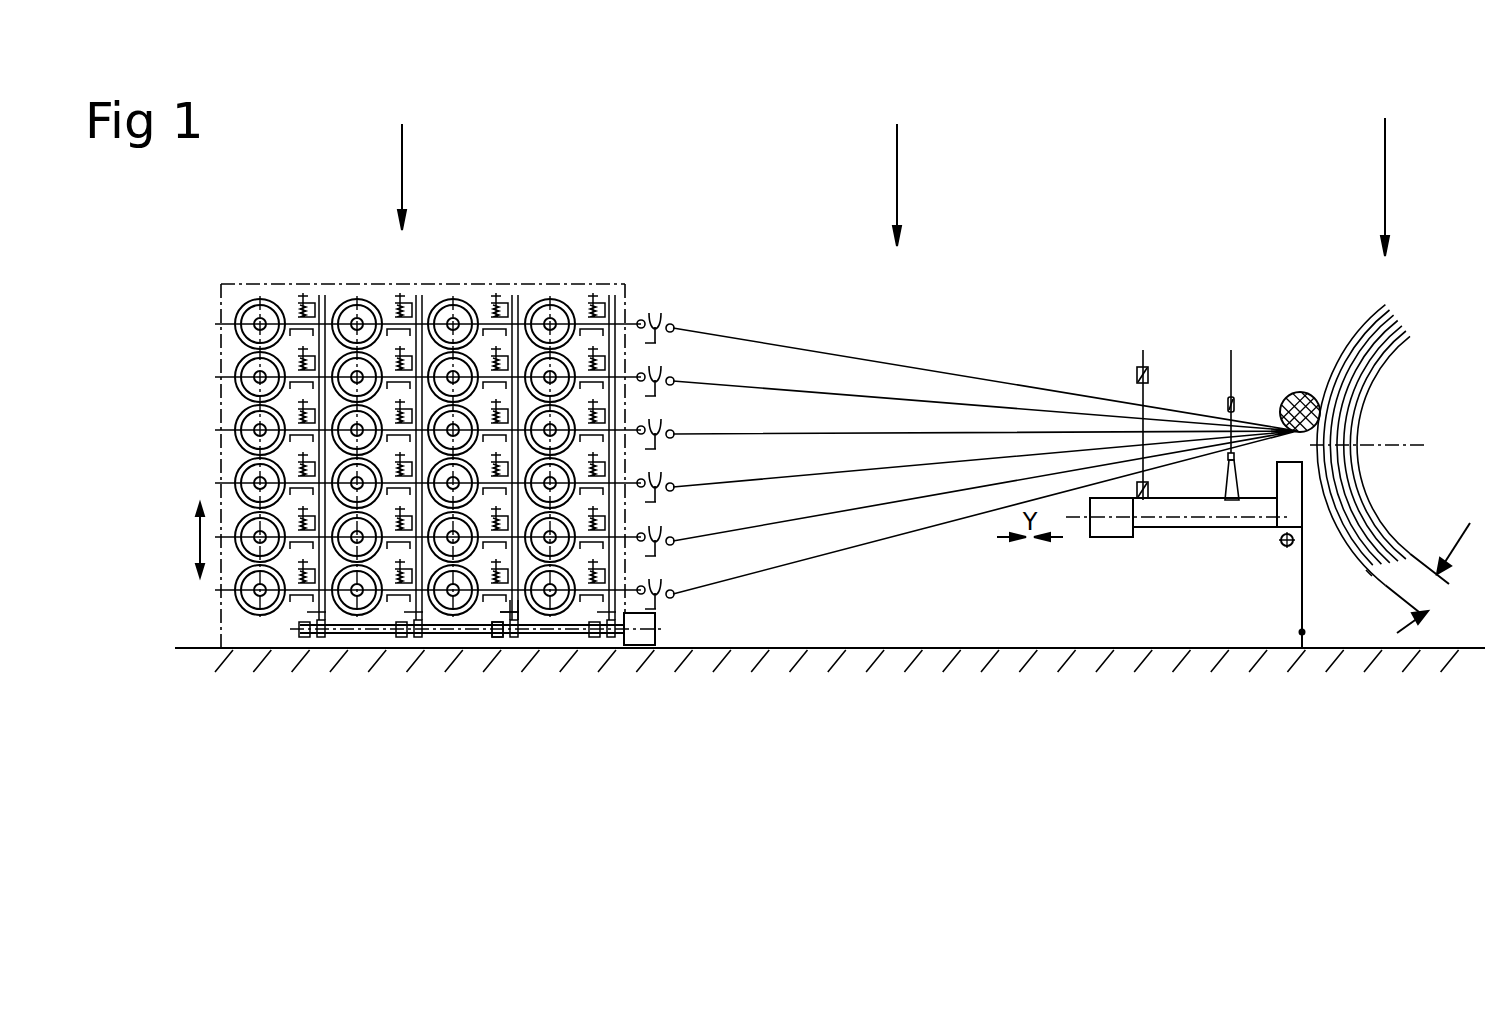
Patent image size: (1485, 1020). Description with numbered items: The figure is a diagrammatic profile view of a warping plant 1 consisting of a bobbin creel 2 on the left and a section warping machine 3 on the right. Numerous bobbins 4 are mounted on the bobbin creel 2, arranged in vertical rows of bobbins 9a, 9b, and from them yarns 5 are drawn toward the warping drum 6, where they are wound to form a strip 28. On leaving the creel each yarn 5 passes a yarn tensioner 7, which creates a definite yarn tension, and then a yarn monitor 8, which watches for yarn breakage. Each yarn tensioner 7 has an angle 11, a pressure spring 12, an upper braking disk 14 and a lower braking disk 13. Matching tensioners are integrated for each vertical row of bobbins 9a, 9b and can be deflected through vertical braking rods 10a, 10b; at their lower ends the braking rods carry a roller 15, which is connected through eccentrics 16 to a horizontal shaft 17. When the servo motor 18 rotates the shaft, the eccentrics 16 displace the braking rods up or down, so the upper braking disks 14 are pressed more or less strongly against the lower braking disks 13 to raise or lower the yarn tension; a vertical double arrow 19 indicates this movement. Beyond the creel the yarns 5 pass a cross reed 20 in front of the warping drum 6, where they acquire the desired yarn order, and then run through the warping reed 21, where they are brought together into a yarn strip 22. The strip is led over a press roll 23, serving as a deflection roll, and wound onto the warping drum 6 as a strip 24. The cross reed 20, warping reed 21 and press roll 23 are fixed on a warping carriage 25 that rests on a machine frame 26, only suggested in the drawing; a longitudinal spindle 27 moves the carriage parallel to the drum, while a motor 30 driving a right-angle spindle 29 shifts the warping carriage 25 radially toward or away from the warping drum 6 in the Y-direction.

The warping plant 1 is at (897, 167).
The bobbin creel 2 is at (400, 159).
The section warping machine 3 is at (1385, 172).
The bobbins 4 is at (343, 296).
The yarns 5 is at (824, 350).
The warping drum 6 is at (1372, 368).
The yarn tensioner 7 is at (283, 292).
The yarn monitor 8 is at (652, 305).
The vertical row of bobbins 9a is at (560, 293).
The vertical row of bobbins 9b is at (463, 293).
The vertical braking rod 10a is at (606, 293).
The vertical braking rod 10b is at (513, 293).
The angle 11 is at (299, 352).
The pressure spring 12 is at (297, 417).
The lower braking disk 13 is at (296, 490).
The upper braking disk 14 is at (296, 474).
The roller 15 is at (493, 601).
The eccentrics 16 is at (508, 637).
The horizontal shaft 17 is at (575, 632).
The servo motor 18 is at (645, 643).
The vertical adjustment direction 19 is at (200, 541).
The cross reed 20 is at (1143, 365).
The warping reed 21 is at (1231, 395).
The yarn strip 22 is at (1260, 422).
The press roll 23 is at (1301, 393).
The strip 24 is at (1370, 568).
The warping carriage 25 is at (1203, 526).
The machine frame 26 is at (1302, 632).
The longitudinal spindle 27 is at (1286, 548).
The strip 28 is at (1428, 588).
The slide axis 29 is at (1167, 516).
The motor 30 is at (1118, 535).